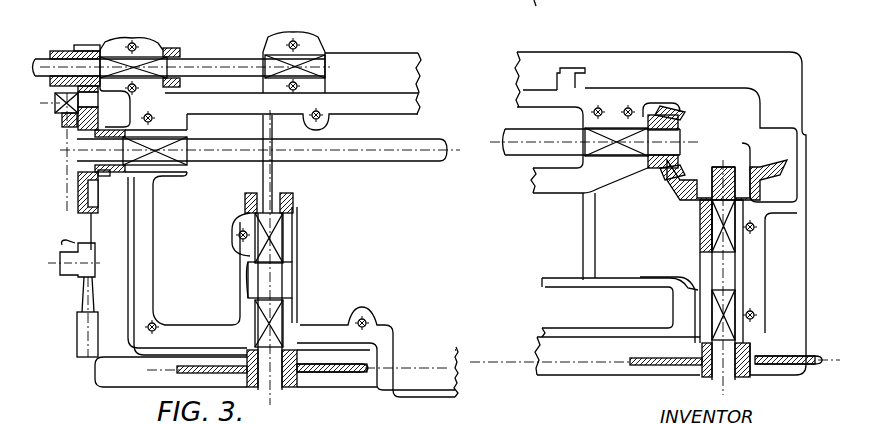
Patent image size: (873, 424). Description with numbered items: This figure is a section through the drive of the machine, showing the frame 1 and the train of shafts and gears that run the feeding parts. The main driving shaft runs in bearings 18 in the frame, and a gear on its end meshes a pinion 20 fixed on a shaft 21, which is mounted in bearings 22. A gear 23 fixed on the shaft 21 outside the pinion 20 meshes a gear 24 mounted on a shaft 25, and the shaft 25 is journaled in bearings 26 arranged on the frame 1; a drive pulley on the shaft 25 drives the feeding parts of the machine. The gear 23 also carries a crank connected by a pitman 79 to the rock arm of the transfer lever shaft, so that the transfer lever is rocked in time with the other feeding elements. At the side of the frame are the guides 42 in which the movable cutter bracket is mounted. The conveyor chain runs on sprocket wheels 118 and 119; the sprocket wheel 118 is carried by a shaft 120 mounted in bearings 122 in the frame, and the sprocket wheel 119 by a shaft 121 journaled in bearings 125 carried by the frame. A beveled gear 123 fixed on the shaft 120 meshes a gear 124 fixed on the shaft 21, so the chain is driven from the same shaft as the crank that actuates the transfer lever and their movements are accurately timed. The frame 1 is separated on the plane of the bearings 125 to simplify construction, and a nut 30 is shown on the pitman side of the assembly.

The frame 1 is at (405, 78).
The bearings 18 is at (85, 297).
The pinion 20 is at (108, 176).
The shaft 21 is at (373, 152).
The bearings 22 is at (165, 170).
The gear 23 is at (80, 178).
The gear 24 is at (86, 45).
The shaft 25 is at (205, 60).
The bearings 26 is at (150, 48).
The nut 30 is at (62, 113).
The guides 42 is at (578, 81).
The pitman 79 is at (66, 118).
The sprocket wheel 118 is at (772, 353).
The sprocket wheel 119 is at (332, 374).
The shaft 120 is at (730, 310).
The shaft 121 is at (280, 323).
The bearings 122 is at (700, 228).
The beveled gear 123 is at (690, 166).
The gear 124 is at (683, 118).
The bearings 125 is at (290, 233).